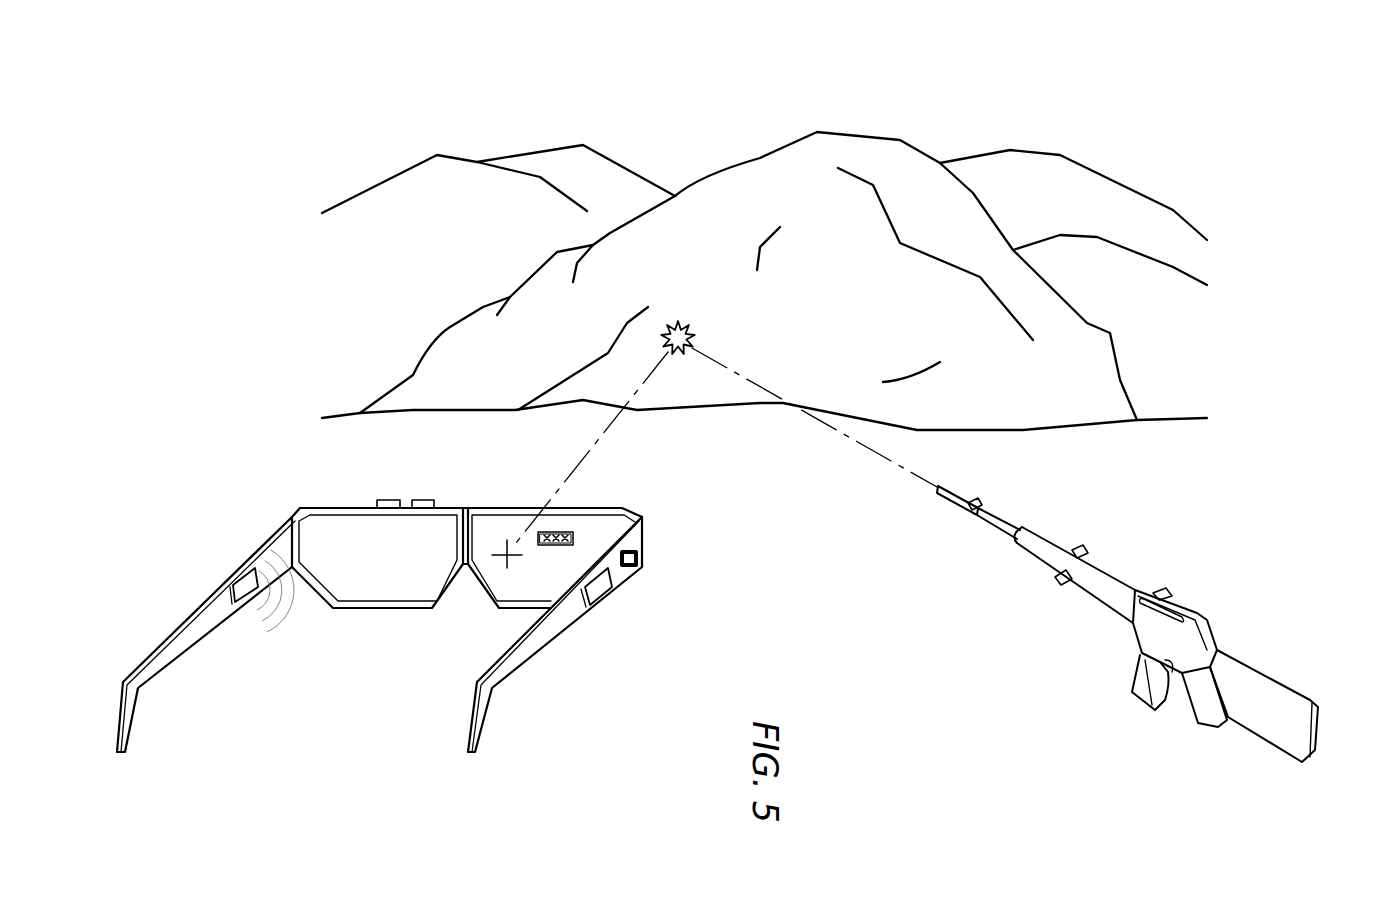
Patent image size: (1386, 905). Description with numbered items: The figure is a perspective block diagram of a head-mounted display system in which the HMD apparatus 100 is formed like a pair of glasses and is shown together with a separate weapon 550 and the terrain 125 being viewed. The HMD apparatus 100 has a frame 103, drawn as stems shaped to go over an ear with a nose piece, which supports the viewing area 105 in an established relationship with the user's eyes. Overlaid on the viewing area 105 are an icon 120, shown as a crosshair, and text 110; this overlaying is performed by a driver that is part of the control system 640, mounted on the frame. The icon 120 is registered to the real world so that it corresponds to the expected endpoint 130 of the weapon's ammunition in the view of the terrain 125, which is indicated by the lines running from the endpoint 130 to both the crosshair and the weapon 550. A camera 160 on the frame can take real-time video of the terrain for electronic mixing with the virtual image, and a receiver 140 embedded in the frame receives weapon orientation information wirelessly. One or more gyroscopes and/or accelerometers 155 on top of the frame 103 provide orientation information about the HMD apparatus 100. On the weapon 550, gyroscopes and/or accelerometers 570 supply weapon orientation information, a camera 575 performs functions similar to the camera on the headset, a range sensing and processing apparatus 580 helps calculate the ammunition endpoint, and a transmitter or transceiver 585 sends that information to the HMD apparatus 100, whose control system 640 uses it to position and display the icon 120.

The HMD apparatus 100 is at (413, 597).
The frame 103 is at (527, 652).
The viewing area 105 is at (358, 593).
The text 110 is at (557, 530).
The icon 120 is at (502, 547).
The terrain 125 is at (870, 133).
The expected endpoint 130 is at (688, 324).
The receiver 140 is at (247, 598).
The gyroscopes and/or accelerometers 155 is at (420, 498).
The camera 160 is at (599, 588).
The control system 640 is at (638, 557).
The weapon 550 is at (1132, 616).
The gyroscopes and/or accelerometers 570 is at (1081, 544).
The camera 575 is at (977, 502).
The range sensing and processing apparatus 580 is at (1165, 588).
The transmitter or transceiver 585 is at (1063, 587).